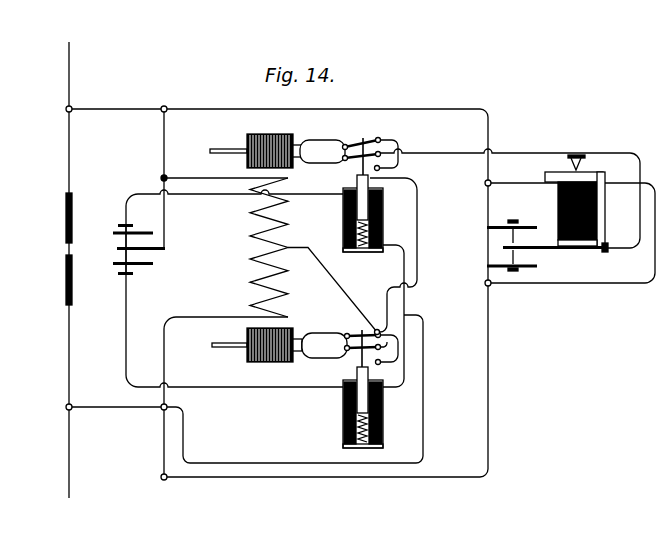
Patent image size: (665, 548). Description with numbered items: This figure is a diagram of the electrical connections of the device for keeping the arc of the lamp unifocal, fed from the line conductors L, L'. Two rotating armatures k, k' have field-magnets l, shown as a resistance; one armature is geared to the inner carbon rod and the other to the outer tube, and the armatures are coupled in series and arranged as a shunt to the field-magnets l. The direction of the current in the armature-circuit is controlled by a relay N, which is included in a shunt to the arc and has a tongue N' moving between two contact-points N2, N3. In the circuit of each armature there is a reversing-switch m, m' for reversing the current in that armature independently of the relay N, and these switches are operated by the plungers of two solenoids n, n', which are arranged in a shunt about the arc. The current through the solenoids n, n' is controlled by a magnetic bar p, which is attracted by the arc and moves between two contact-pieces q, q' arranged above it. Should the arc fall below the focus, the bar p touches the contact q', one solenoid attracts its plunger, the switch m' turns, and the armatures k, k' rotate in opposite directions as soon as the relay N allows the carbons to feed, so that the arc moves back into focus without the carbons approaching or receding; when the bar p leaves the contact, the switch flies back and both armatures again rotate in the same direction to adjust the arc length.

The line conductor L is at (59, 218).
The line conductor L' is at (57, 280).
The contact-piece q is at (133, 229).
The contact-piece q' is at (133, 268).
The magnetic bar p is at (117, 249).
The field-magnets l is at (260, 251).
The rotating armature k is at (261, 145).
The rotating armature k' is at (261, 354).
The reversing-switch m is at (340, 157).
The reversing-switch m' is at (341, 349).
The solenoid n is at (369, 213).
The solenoid n' is at (371, 407).
The relay N is at (573, 201).
The tongue N' is at (555, 241).
The contact-point N2 is at (510, 256).
The contact-point N3 is at (510, 238).